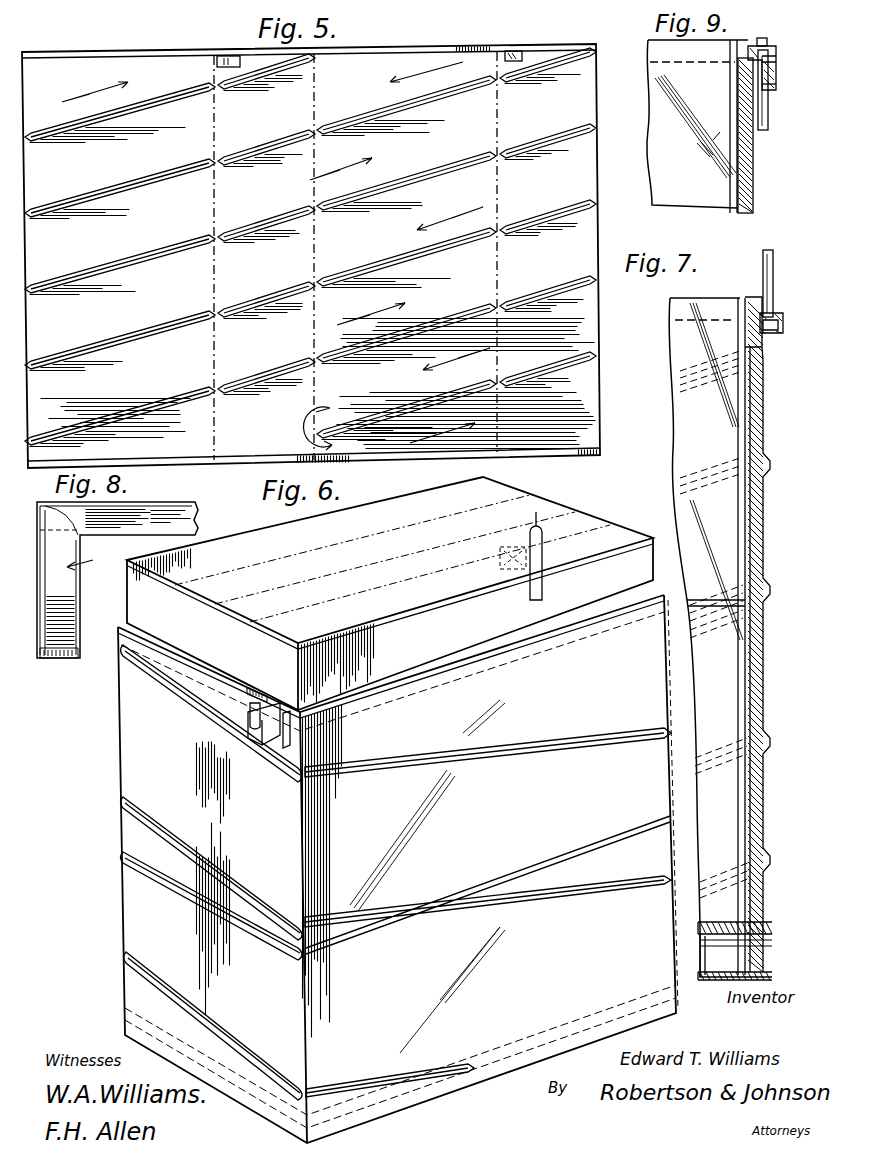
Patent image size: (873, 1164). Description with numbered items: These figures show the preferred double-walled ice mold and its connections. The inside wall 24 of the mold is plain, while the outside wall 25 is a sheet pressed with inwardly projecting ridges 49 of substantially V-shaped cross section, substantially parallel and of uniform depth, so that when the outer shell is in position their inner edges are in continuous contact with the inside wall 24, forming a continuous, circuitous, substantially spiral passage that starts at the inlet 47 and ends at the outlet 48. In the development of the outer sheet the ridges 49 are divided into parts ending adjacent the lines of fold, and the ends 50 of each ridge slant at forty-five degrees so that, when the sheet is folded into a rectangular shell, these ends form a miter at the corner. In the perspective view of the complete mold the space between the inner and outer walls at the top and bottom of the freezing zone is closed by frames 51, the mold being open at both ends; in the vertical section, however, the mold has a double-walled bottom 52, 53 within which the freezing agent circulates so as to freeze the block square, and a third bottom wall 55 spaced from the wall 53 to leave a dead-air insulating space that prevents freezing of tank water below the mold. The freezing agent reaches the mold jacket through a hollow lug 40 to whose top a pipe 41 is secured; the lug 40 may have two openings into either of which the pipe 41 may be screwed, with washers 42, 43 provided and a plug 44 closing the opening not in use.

In FIG. 7, the inside wall 24 is at (753, 815).
In FIG. 8, the inside wall 24 is at (79, 626).
In FIG. 6, the inside wall 24 is at (390, 593).
In FIG. 5, the outside wall 25 is at (311, 256).
In FIG. 9, the outside wall 25 is at (753, 175).
In FIG. 7, the outside wall 25 is at (764, 806).
In FIG. 8, the outside wall 25 is at (42, 646).
In FIG. 6, the outside wall 25 is at (397, 869).
In FIG. 9, the hollow lug 40 is at (776, 50).
In FIG. 7, the hollow lug 40 is at (768, 335).
In FIG. 6, the hollow lug 40 is at (262, 738).
In FIG. 9, the pipe 41 is at (768, 112).
In FIG. 7, the pipe 41 is at (774, 262).
In FIG. 6, the pipe 41 is at (252, 720).
In FIG. 9, the washer 42 is at (776, 64).
In FIG. 9, the washer 43 is at (776, 88).
In FIG. 9, the plug 44 is at (770, 34).
In FIG. 5, the inlet 47 is at (514, 54).
In FIG. 9, the inlet 47 is at (735, 70).
In FIG. 5, the outlet 48 is at (233, 56).
In FIG. 7, the outlet 48 is at (746, 330).
In FIG. 6, the outlet 48 is at (500, 566).
In FIG. 5, the ridges 49 is at (466, 90).
In FIG. 7, the ridges 49 is at (766, 607).
In FIG. 8, the ridges 49 is at (133, 520).
In FIG. 6, the ridges 49 is at (564, 748).
In FIG. 5, the ends of ridges 50 is at (494, 316).
In FIG. 5, the frame 51 is at (424, 50).
In FIG. 9, the frame 51 is at (735, 50).
In FIG. 7, the frame 51 is at (750, 291).
In FIG. 8, the frame 51 is at (117, 580).
In FIG. 6, the frame 51 is at (128, 1017).
In FIG. 7, the double walled bottom wall 52 is at (720, 922).
In FIG. 7, the double walled bottom wall 53 is at (728, 946).
In FIG. 7, the third bottom wall 55 is at (712, 981).